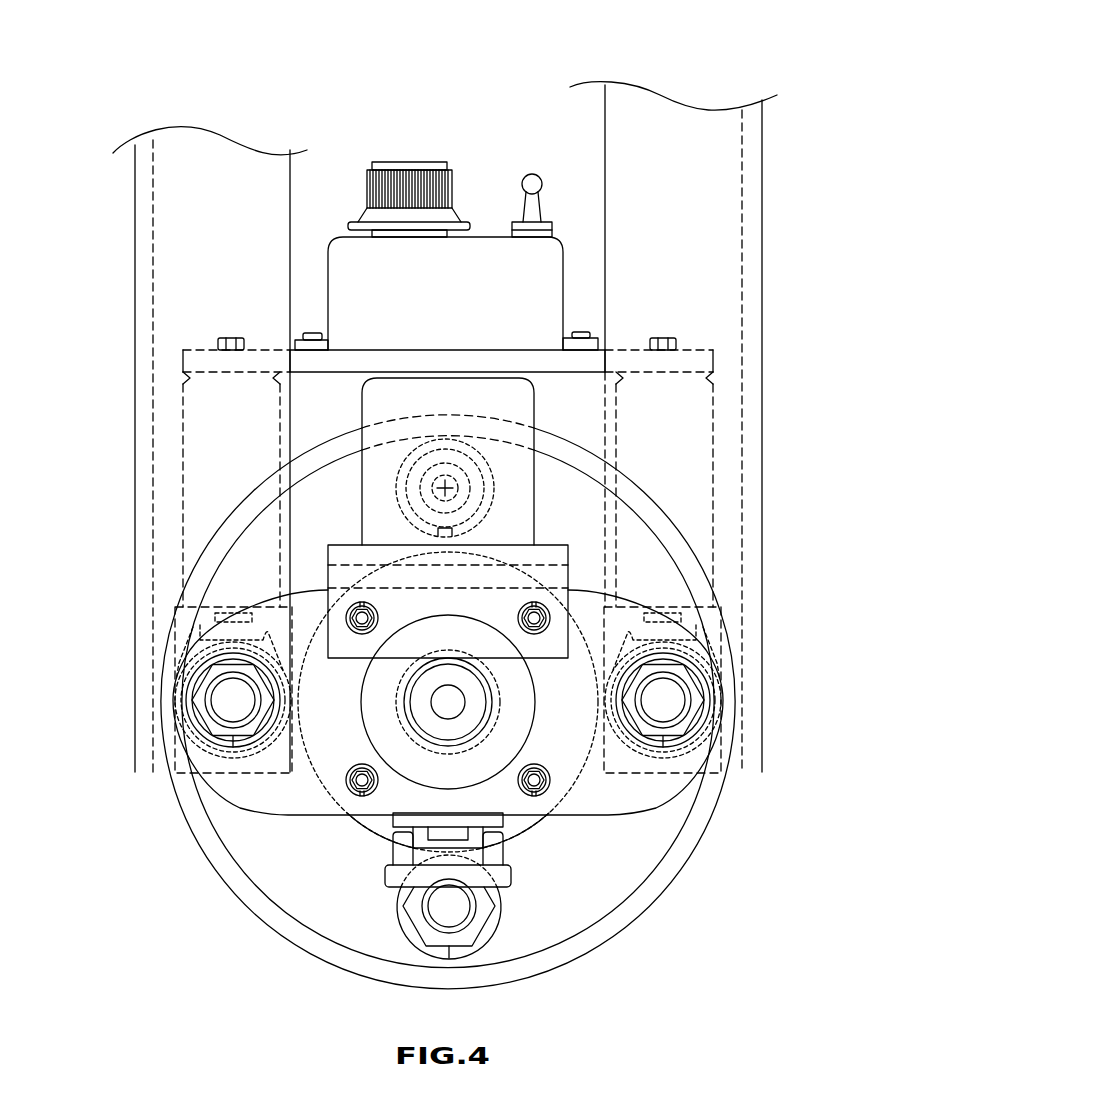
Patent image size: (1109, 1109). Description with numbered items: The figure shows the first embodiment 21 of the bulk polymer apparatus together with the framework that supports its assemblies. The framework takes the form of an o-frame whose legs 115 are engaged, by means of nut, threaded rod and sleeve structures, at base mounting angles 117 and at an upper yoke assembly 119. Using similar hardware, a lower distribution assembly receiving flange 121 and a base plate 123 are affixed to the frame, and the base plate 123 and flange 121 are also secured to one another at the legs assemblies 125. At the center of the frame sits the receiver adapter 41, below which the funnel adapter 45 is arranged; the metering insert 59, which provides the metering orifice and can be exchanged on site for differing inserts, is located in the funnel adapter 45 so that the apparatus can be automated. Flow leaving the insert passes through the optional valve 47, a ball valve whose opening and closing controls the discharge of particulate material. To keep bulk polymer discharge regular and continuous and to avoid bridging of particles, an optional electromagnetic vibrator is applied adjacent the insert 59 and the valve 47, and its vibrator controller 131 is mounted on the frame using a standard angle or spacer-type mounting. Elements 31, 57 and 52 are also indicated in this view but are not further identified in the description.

The embodiment 21 is at (688, 96).
The base mounting angles 117 is at (210, 173).
The vibrator controller 131 is at (487, 250).
The legs assemblies 125 is at (446, 480).
The upper yoke assembly 119 is at (634, 588).
The lower distribution assembly receiving flange 121 is at (697, 615).
The legs 115 is at (178, 712).
The base plate 123 is at (700, 823).
The receiver adapter 41 is at (515, 727).
The shaft 31 is at (442, 708).
The funnel adapter 45 is at (432, 726).
The ring 57 is at (340, 812).
The metering insert 59 is at (428, 728).
The valve 47 is at (505, 873).
The clamp 52 is at (448, 839).